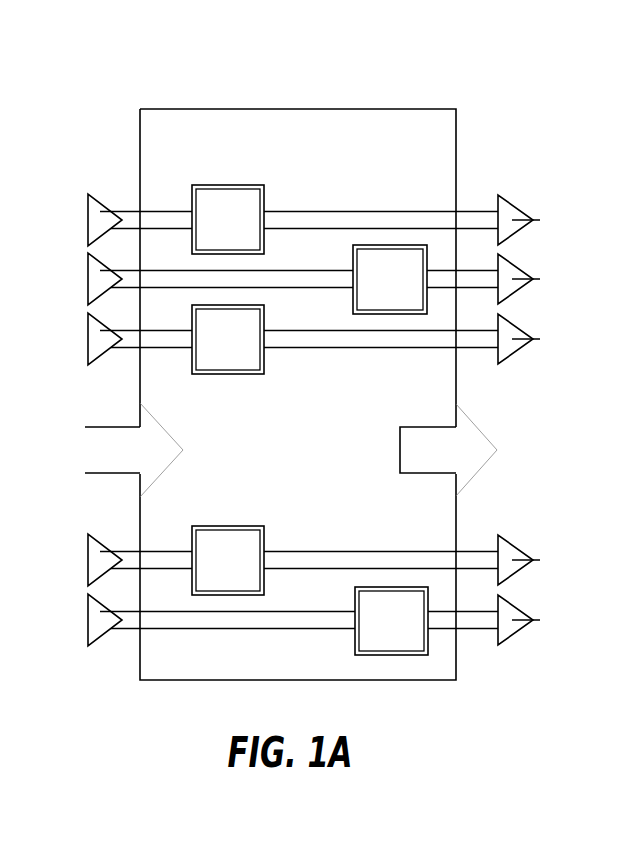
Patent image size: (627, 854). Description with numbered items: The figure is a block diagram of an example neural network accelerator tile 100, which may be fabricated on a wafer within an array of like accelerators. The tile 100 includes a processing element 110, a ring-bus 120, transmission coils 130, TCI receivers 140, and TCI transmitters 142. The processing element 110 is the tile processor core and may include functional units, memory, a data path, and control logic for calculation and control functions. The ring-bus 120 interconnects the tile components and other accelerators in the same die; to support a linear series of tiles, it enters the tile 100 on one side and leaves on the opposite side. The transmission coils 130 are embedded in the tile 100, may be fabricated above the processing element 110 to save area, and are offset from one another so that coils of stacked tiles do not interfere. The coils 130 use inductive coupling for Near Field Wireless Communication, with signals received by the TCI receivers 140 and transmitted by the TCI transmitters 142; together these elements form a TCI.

The neural network accelerator tile 100 is at (168, 54).
The processing element 110 is at (298, 394).
The ring-bus 120 is at (98, 433).
The transmission coils 130 is at (264, 203).
The TCI receivers 140 is at (100, 212).
The TCI transmitters 142 is at (540, 220).